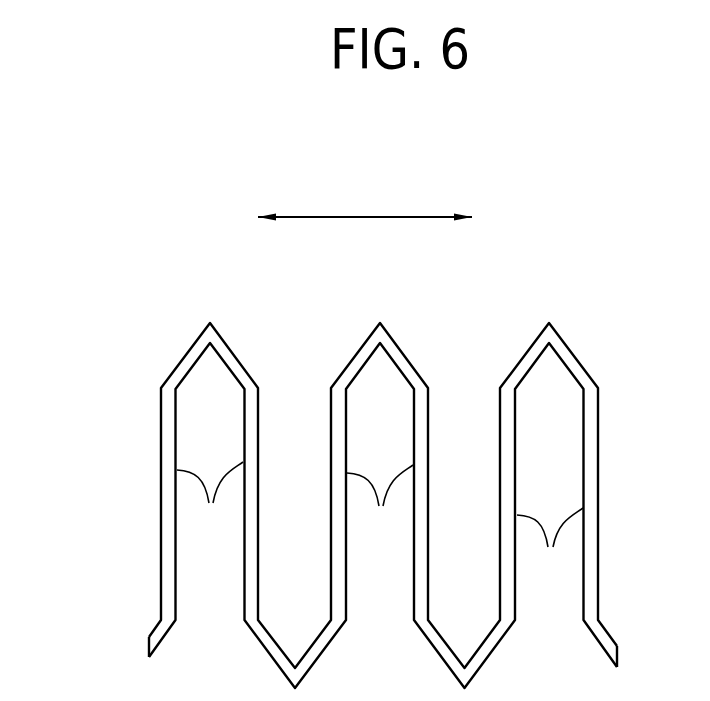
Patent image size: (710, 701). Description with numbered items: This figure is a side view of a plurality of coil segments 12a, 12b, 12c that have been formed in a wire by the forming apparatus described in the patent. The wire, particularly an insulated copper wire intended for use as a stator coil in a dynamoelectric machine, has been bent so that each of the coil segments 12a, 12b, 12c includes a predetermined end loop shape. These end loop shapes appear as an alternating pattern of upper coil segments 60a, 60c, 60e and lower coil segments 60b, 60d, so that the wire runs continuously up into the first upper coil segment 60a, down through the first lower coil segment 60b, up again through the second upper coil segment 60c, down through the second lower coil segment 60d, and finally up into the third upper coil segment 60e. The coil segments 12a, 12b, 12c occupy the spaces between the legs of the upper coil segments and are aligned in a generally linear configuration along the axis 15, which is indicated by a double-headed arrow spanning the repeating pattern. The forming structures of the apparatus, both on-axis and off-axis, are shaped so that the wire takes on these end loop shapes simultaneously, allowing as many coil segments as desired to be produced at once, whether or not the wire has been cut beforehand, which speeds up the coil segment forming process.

The axis 15 is at (365, 216).
The upper coil segment 60a is at (182, 362).
The lower coil segment 60b is at (270, 653).
The upper coil segment 60c is at (352, 357).
The lower coil segment 60d is at (438, 653).
The upper coil segment 60e is at (580, 355).
The coil segment 12a is at (210, 502).
The coil segment 12b is at (380, 505).
The coil segment 12c is at (550, 546).